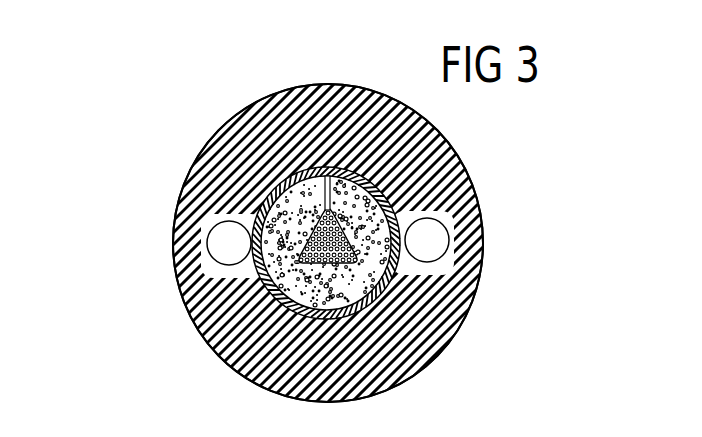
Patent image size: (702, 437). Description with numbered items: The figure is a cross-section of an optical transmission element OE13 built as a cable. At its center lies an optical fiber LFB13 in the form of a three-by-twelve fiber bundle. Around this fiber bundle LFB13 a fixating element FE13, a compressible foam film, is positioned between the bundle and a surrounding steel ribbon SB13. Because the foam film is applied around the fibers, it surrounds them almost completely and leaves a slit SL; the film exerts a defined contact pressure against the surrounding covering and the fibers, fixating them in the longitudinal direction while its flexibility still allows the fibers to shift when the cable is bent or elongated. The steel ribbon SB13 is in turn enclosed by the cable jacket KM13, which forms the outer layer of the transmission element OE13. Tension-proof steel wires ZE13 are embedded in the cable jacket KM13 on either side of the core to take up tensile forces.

The optical transmission element OE13 is at (168, 165).
The slit SL is at (326, 196).
The optical fiber bundle LFB13 is at (347, 224).
The tension-proof steel wires ZE13 is at (420, 238).
The fixating element FE13 is at (292, 250).
The steel ribbon SB13 is at (385, 274).
The cable jacket KM13 is at (432, 356).